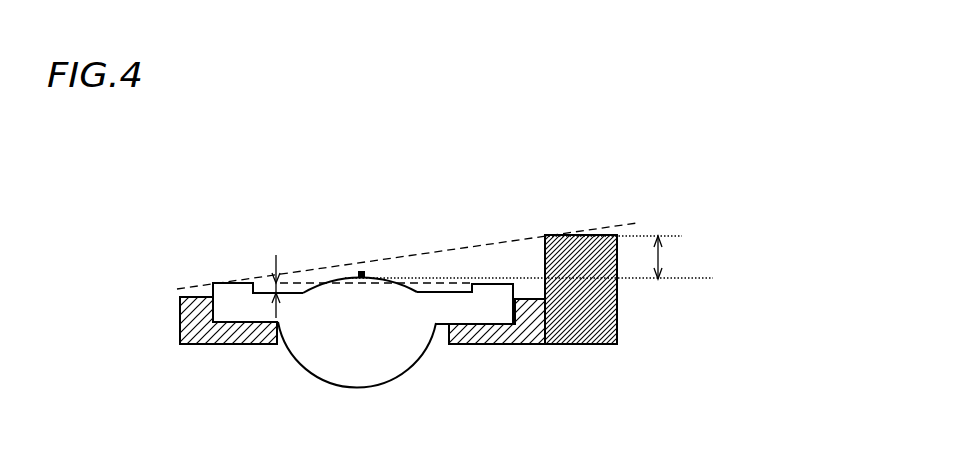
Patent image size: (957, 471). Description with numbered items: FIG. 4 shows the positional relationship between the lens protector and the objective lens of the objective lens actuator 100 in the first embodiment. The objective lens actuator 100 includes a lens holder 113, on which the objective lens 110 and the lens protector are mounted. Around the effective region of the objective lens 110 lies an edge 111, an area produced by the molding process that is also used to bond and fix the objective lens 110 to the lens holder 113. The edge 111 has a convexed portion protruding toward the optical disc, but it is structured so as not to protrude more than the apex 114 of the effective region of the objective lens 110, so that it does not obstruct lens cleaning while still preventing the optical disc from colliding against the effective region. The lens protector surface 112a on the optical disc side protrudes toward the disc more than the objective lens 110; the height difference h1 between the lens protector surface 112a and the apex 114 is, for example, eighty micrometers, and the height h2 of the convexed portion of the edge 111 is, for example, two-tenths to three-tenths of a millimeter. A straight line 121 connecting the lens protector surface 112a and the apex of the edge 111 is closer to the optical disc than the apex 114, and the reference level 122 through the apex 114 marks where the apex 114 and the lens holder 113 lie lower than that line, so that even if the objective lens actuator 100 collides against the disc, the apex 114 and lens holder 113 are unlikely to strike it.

The objective lens actuator 100 is at (436, 203).
The objective lens 110 is at (327, 318).
The edge 111 is at (227, 292).
The lens protector surface 112a is at (595, 236).
The lens holder 113 is at (182, 343).
The apex 114 is at (360, 273).
The straight line 121 is at (545, 236).
The second reference plane 122 is at (697, 280).
The height difference h1 is at (670, 257).
The height h2 is at (270, 288).